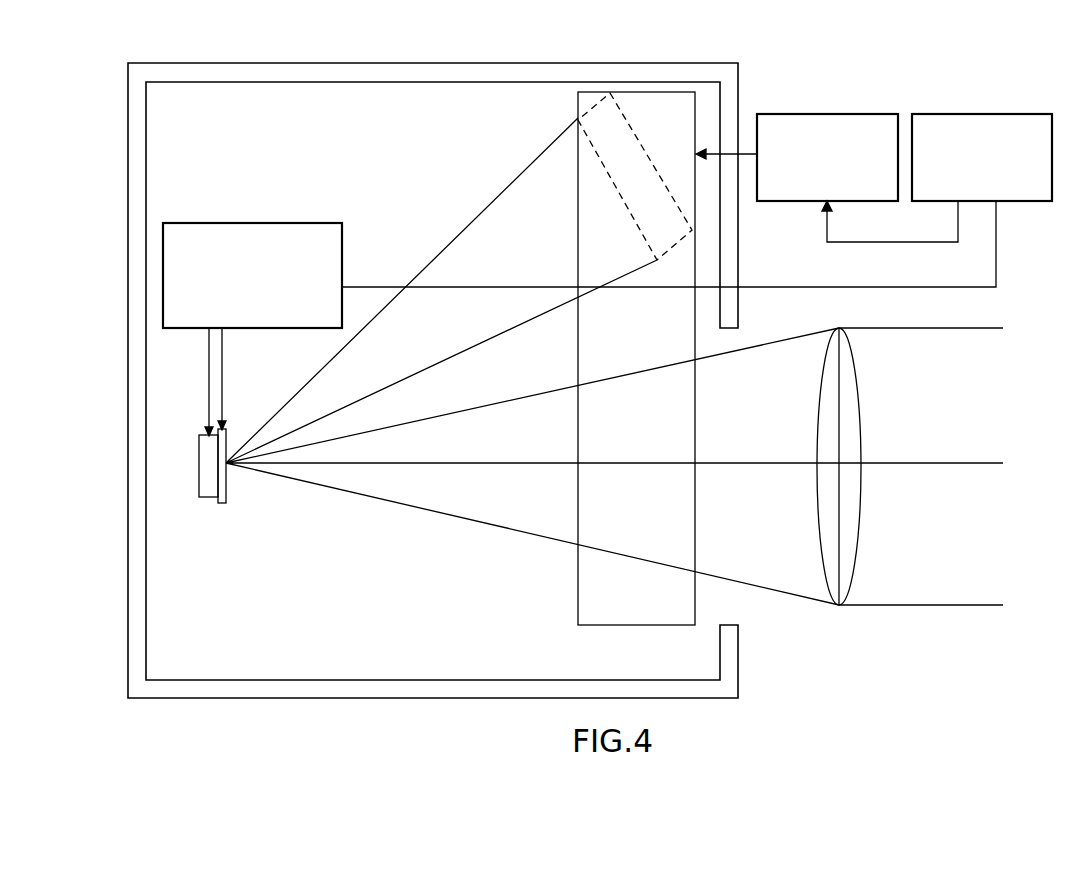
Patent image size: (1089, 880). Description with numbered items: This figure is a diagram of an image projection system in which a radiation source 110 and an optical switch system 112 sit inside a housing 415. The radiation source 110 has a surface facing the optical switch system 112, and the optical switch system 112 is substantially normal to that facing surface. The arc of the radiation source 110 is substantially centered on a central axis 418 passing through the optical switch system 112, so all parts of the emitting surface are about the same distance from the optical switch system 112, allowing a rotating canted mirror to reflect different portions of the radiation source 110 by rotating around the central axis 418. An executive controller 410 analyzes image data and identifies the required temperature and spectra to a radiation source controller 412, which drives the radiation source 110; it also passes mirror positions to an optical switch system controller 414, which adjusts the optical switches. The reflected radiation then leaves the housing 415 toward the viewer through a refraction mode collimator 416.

The radiation source 110 is at (578, 118).
The optical switch system 112 is at (227, 490).
The executive controller 410 is at (945, 113).
The radiation source controller 412 is at (830, 113).
The optical switch system controller 414 is at (342, 258).
The housing 415 is at (687, 64).
The refraction mode collimator 416 is at (835, 597).
The central axis 418 is at (930, 463).